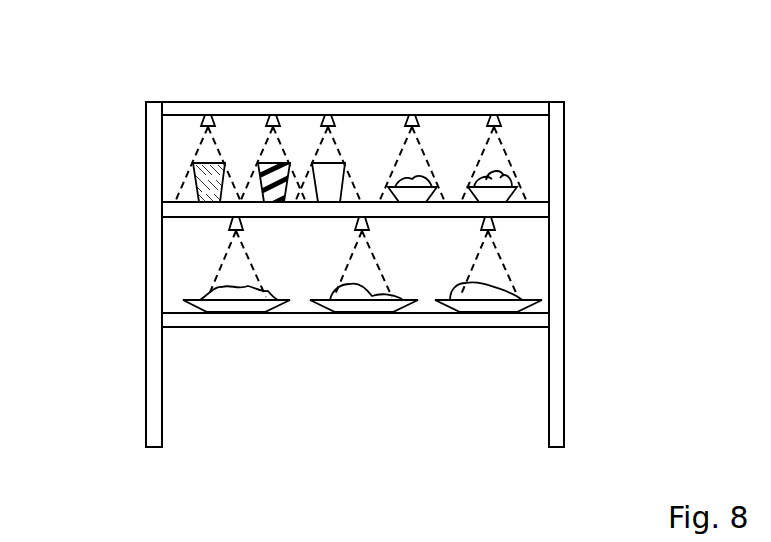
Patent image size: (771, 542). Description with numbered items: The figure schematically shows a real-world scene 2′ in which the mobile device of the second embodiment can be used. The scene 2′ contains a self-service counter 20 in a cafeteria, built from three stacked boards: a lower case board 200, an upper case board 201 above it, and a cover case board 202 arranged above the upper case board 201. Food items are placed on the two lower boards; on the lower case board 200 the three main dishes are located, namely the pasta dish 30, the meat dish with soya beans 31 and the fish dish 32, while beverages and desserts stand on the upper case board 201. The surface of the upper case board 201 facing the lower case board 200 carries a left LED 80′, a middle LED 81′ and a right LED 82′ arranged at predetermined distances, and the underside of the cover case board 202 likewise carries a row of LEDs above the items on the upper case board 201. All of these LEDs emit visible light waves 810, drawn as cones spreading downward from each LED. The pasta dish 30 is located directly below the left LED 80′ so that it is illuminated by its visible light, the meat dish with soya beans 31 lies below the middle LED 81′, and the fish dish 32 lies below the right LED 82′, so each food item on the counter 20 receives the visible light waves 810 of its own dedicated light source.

The real-world scene 2′ is at (78, 72).
The self-service counter 20 is at (565, 152).
The lower case board 200 is at (526, 327).
The upper case board 201 is at (528, 218).
The cover case board 202 is at (458, 102).
The pasta dish 30 is at (234, 292).
The meat dish with soya beans 31 is at (352, 298).
The fish dish 32 is at (478, 298).
The left LED 80′ is at (228, 223).
The middle LED 81′ is at (355, 223).
The right LED 82′ is at (481, 223).
The visible light waves 810 is at (350, 255).